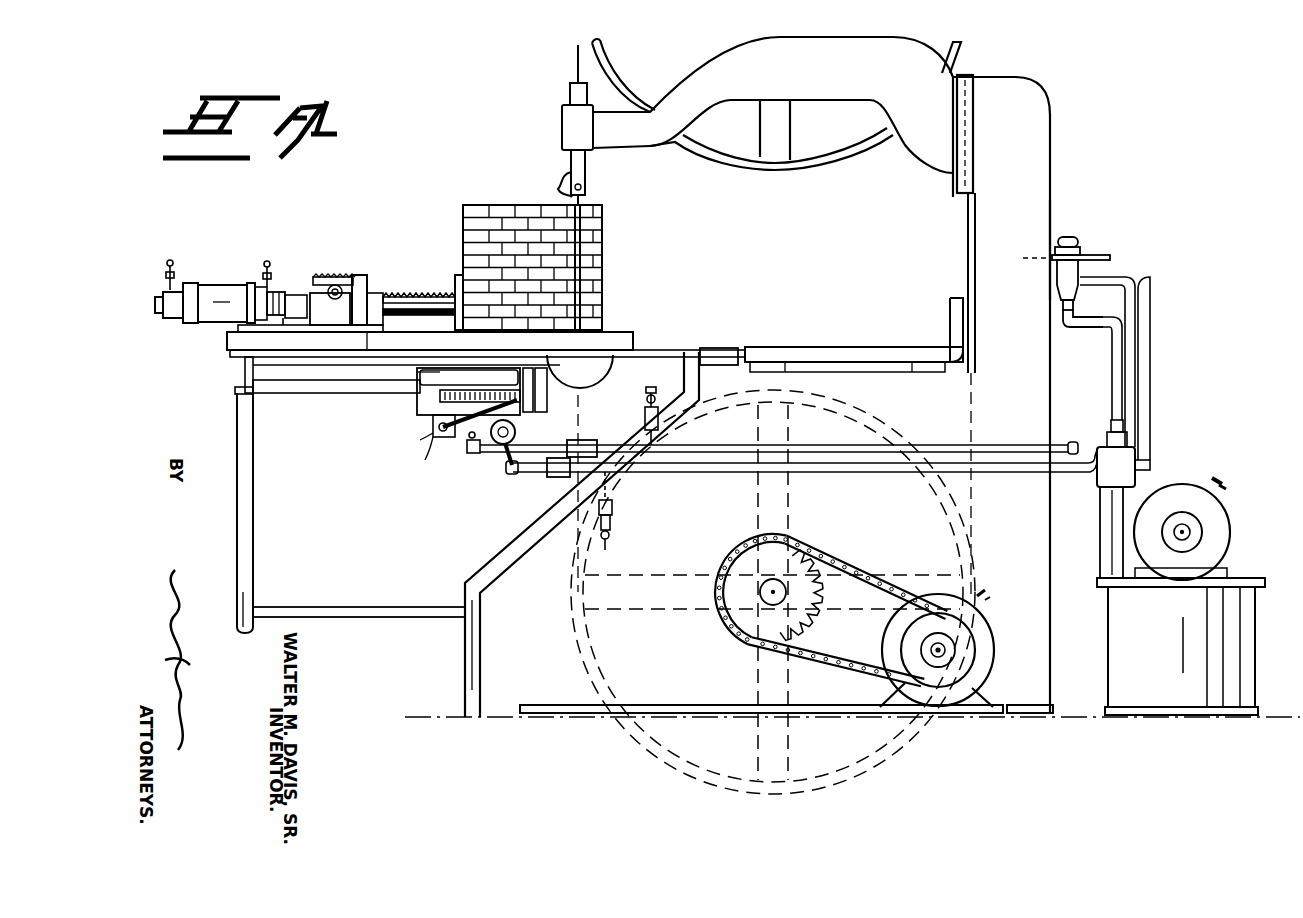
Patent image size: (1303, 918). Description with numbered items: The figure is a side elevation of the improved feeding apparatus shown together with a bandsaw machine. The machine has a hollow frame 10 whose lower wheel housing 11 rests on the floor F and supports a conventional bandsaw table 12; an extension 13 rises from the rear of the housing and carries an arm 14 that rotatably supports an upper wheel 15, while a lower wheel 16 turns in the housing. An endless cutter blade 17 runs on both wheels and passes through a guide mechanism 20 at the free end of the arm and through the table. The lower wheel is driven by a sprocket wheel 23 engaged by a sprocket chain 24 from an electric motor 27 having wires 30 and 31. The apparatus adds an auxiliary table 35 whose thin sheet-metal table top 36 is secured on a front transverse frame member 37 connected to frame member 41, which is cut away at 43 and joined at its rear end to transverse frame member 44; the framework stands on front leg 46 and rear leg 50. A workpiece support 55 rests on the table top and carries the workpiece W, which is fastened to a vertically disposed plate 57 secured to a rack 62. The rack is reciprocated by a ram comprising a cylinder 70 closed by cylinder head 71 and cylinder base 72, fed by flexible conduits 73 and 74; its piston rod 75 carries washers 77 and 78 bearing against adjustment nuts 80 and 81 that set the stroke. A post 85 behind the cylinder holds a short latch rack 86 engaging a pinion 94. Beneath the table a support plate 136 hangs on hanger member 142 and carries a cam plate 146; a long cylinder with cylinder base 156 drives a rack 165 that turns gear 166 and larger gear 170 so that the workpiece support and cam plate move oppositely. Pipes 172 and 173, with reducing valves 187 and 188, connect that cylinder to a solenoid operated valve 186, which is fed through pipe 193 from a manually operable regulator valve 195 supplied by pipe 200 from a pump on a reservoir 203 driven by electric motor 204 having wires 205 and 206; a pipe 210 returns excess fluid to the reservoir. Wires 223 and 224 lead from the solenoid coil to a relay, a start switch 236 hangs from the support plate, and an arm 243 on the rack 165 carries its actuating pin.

The hollow frame 10 is at (1052, 180).
The lower wheel housing 11 is at (575, 712).
The bandsaw table 12 is at (734, 351).
The extension 13 is at (1050, 213).
The arm 14 is at (750, 94).
The upper wheel 15 is at (733, 163).
The lower wheel 16 is at (868, 411).
The endless cutter blade 17 is at (577, 60).
The guide mechanism 20 is at (556, 180).
The sprocket wheel 23 is at (740, 626).
The sprocket chain 24 is at (826, 662).
The electric motor 27 is at (991, 624).
The wire 30 is at (978, 596).
The wire 31 is at (986, 600).
The auxiliary table 35 is at (229, 395).
The table top 36 is at (310, 357).
The front transverse frame member 37 is at (246, 375).
The frame member 41 is at (312, 385).
The cut-away portion 43 is at (416, 375).
The transverse frame member 44 is at (692, 352).
The front leg 46 is at (255, 542).
The rear leg 50 is at (490, 560).
The workpiece support 55 is at (221, 344).
The vertically disposed plate 57 is at (456, 283).
The rack 62 is at (400, 296).
The cylinder 70 is at (220, 288).
The cylinder head 71 is at (253, 288).
The cylinder base 72 is at (188, 282).
The flexible conduit 73 is at (263, 266).
The flexible conduit 74 is at (166, 266).
The piston rod 75 is at (274, 294).
The washer 77 is at (270, 327).
The washer 78 is at (168, 318).
The adjustment nut 80 is at (285, 327).
The adjustment nut 81 is at (159, 299).
The post 85 is at (365, 280).
The rack 86 is at (325, 276).
The pinion 94 is at (337, 298).
The support plate 136 is at (420, 420).
The hanger member 142 is at (432, 403).
The cam plate 146 is at (510, 366).
The cylinder base 156 is at (458, 440).
The rack 165 is at (516, 432).
The gear 166 is at (440, 349).
The gear 170 is at (470, 366).
The pipe 172 is at (508, 468).
The pipe 173 is at (470, 455).
The solenoid operated valve 186 is at (1106, 498).
The reducing valve 187 is at (548, 478).
The reducing valve 188 is at (585, 443).
The pipe 193 is at (1150, 368).
The regulator valve 195 is at (1112, 252).
The pipe 200 is at (1150, 310).
The reservoir 203 is at (1256, 658).
The electric motor 204 is at (1226, 517).
The wire 205 is at (1224, 478).
The wire 206 is at (1228, 488).
The pipe 210 is at (1111, 367).
The wire 223 is at (1135, 423).
The wire 224 is at (1113, 422).
The start switch 236 is at (420, 440).
The arm 243 is at (425, 460).
The workpiece W is at (460, 236).
The floor F is at (410, 712).